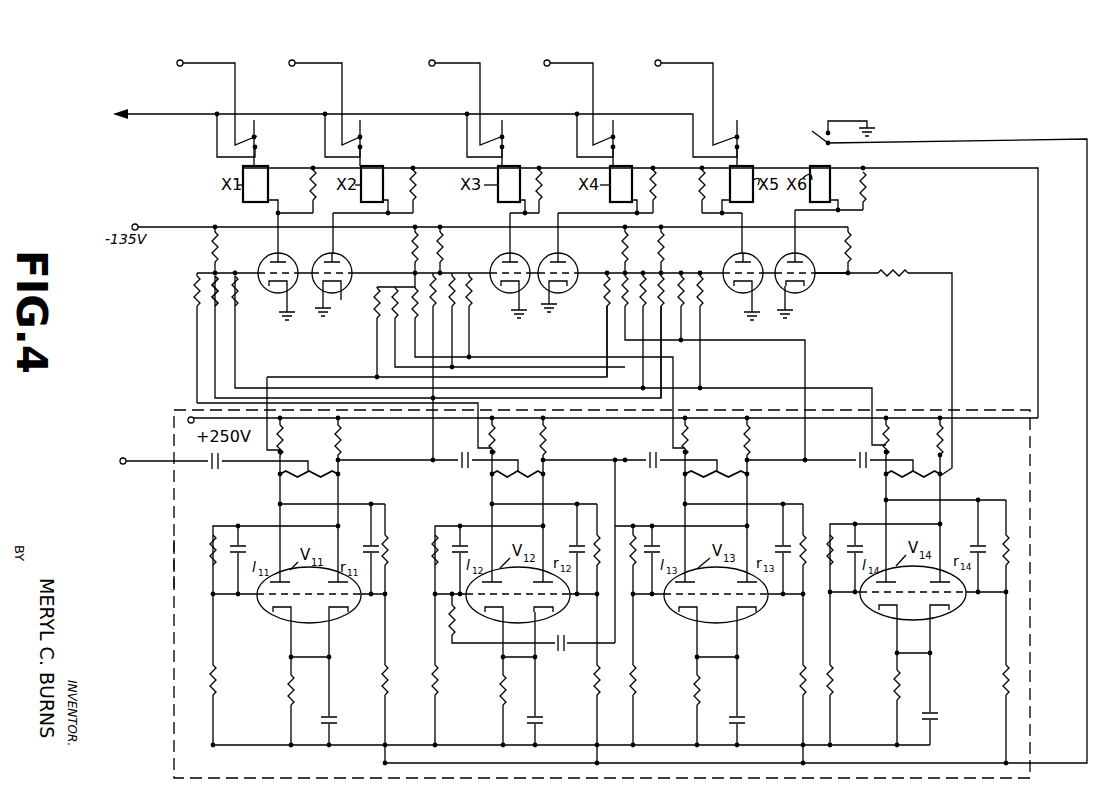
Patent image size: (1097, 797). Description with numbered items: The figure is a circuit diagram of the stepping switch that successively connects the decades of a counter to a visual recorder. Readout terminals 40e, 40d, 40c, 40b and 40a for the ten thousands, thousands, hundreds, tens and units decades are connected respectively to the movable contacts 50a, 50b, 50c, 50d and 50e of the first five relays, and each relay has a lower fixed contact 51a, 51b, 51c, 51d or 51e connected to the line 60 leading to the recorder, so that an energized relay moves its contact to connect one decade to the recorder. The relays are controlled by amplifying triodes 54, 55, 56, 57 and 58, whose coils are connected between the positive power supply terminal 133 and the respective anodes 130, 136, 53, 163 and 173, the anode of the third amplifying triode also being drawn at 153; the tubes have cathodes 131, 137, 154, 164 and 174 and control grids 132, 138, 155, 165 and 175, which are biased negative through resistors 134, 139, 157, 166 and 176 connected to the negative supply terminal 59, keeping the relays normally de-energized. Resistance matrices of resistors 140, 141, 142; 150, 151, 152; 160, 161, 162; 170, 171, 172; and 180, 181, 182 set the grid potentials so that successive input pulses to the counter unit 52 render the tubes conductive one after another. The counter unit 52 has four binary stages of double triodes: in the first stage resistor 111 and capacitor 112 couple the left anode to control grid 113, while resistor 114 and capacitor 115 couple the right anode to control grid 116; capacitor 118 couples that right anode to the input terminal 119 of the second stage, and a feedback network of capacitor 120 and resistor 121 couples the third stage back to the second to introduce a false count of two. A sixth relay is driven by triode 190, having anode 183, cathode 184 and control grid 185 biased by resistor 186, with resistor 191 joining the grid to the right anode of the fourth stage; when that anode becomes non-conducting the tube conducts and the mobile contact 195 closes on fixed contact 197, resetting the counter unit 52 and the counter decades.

The readout terminal 40a is at (217, 102).
The readout terminal 40b is at (325, 102).
The readout terminal 40c is at (466, 102).
The readout terminal 40d is at (579, 102).
The readout terminal 40e is at (696, 102).
The movable contact 50a is at (262, 137).
The movable contact 50b is at (367, 137).
The movable contact 50c is at (508, 137).
The movable contact 50d is at (619, 137).
The movable terminal 50e is at (743, 137).
The lower fixed contact 51a is at (258, 148).
The lower fixed contact 51b is at (363, 148).
The lower fixed contact 51c is at (505, 148).
The lower fixed contact 51d is at (616, 148).
The lower fixed contact 51e is at (740, 149).
The counter unit 52 is at (172, 562).
The anode 53 is at (122, 465).
The triode 54 is at (258, 265).
The triode 55 is at (323, 255).
The triode 56 is at (503, 255).
The triode 57 is at (550, 255).
The triode 58 is at (735, 255).
The negative supply terminal 59 is at (134, 222).
The line 60 is at (183, 115).
The resistor 111 is at (390, 548).
The capacitor 112 is at (366, 540).
The control grid 113 is at (352, 608).
The resistor 114 is at (210, 552).
The capacitor 115 is at (242, 546).
The control grid 116 is at (275, 610).
The capacitor 118 is at (460, 468).
The input terminal 119 is at (518, 476).
The capacitor 120 is at (566, 652).
The resistor 121 is at (458, 620).
The anode 130 is at (274, 250).
The cathode 131 is at (292, 292).
The control grid 132 is at (283, 292).
The power supply terminal 133 is at (178, 412).
The resistor 134 is at (212, 252).
The anode 136 is at (351, 233).
The cathode 137 is at (328, 300).
The control grid 138 is at (338, 290).
The resistor 139 is at (410, 252).
The resistor 140 is at (195, 290).
The resistor 141 is at (196, 310).
The resistor 142 is at (250, 300).
The resistor 150 is at (370, 305).
The resistor 151 is at (386, 345).
The resistor 152 is at (373, 375).
The plate lead 153 is at (492, 256).
The cathode 154 is at (514, 292).
The control grid 155 is at (506, 292).
The resistor 157 is at (452, 242).
The resistor 160 is at (430, 290).
The resistor 161 is at (472, 320).
The resistor 162 is at (476, 295).
The anode 163 is at (578, 233).
The cathode 164 is at (546, 292).
The control grid 165 is at (552, 292).
The resistor 166 is at (622, 255).
The resistor 170 is at (601, 290).
The resistor 171 is at (621, 296).
The resistor 172 is at (640, 290).
The anode 173 is at (726, 259).
The cathode 174 is at (750, 292).
The control grid 175 is at (684, 295).
The resistor 176 is at (663, 250).
The resistor 180 is at (682, 320).
The resistor 181 is at (702, 330).
The resistor 182 is at (704, 290).
The anode 183 is at (805, 248).
The cathode 184 is at (798, 288).
The control grid 185 is at (805, 280).
The resistor 186 is at (852, 247).
The triode 190 is at (782, 256).
The resistor 191 is at (885, 278).
The mobile contact 195 is at (818, 128).
The fixed contact 197 is at (832, 147).